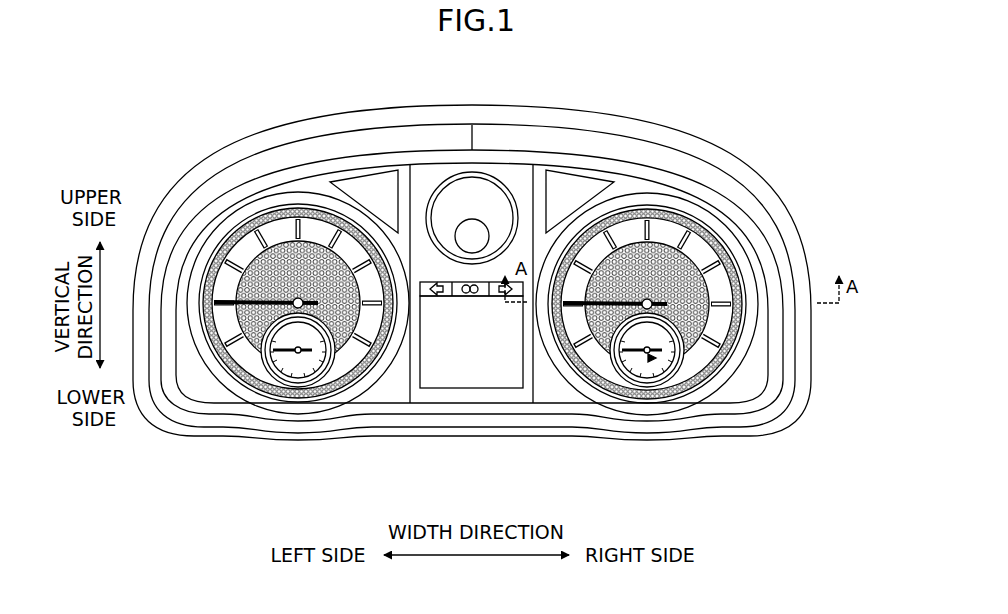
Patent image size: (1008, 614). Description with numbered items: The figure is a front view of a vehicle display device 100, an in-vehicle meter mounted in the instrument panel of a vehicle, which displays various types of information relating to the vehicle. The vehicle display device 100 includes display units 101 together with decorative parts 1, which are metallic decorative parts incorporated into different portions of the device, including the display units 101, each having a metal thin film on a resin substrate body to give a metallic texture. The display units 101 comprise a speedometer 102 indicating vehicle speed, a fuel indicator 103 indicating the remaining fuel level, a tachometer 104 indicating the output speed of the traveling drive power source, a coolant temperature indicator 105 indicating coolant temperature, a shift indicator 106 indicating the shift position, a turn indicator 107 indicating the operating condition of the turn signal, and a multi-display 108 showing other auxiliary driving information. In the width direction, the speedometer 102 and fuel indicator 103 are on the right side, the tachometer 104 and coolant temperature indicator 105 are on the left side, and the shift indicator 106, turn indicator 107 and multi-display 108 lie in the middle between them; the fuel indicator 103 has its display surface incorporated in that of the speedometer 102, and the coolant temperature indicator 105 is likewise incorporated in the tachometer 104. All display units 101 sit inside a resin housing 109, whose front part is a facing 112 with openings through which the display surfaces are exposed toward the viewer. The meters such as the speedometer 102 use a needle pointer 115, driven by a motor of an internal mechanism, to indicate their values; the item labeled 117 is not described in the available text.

The vehicle display device 100 is at (314, 111).
The display units 101 is at (490, 290).
The decorative parts 1 is at (490, 290).
The meter bezel 117 is at (253, 190).
The tachometer 104 is at (271, 254).
The speedometer 102 is at (687, 192).
The coolant temperature indicator 105 is at (272, 380).
The fuel indicator 103 is at (669, 388).
The shift indicator 106 is at (500, 172).
The turn indicator 107 is at (425, 274).
The multi-display 108 is at (497, 390).
The facing 112 is at (814, 381).
The housing 109 is at (518, 245).
The needle pointer 115 is at (238, 337).